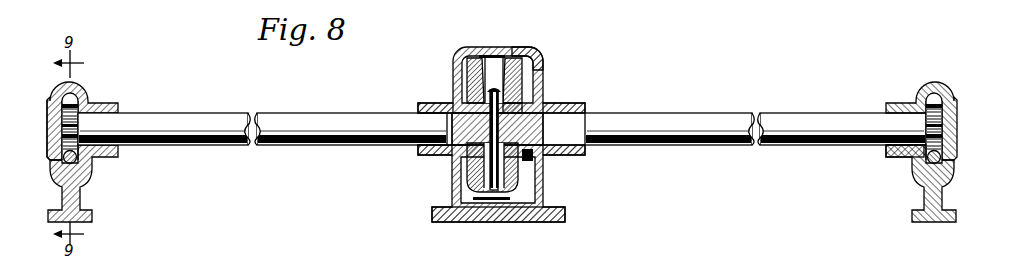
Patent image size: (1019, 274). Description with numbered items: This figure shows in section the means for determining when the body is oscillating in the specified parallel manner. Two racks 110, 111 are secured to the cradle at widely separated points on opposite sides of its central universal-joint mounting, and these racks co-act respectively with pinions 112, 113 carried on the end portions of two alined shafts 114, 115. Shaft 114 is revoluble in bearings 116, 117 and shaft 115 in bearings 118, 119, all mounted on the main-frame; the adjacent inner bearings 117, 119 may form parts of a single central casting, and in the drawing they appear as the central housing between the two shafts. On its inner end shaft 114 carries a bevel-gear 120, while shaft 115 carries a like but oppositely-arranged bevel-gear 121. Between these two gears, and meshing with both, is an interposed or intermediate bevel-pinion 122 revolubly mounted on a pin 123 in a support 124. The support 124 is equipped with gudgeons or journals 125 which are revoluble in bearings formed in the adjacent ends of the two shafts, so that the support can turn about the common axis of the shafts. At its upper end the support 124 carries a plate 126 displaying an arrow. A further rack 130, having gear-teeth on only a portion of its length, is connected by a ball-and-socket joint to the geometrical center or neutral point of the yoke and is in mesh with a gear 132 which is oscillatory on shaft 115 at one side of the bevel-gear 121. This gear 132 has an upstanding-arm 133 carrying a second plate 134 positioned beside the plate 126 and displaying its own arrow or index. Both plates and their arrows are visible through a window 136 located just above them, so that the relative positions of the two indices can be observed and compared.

The rack 110 is at (56, 171).
The rack 111 is at (920, 174).
The pinion 112 is at (90, 104).
The pinion 113 is at (960, 106).
The shaft 114 is at (212, 122).
The shaft 115 is at (722, 119).
The bearing 116 is at (93, 171).
The bearing 117 is at (452, 183).
The bearing 118 is at (896, 157).
The bearing 119 is at (582, 156).
The bevel-gear 120 is at (462, 70).
The bevel-gear 121 is at (533, 76).
The intermediate bevel-pinion 122 is at (509, 214).
The pin 123 is at (518, 182).
The support 124 is at (452, 158).
The gudgeons 125 is at (453, 104).
The plate 126 is at (488, 53).
The rack 130 is at (533, 165).
The gear 132 is at (515, 100).
The upstanding-arm 133 is at (532, 56).
The plate 134 is at (505, 53).
The window 136 is at (494, 52).